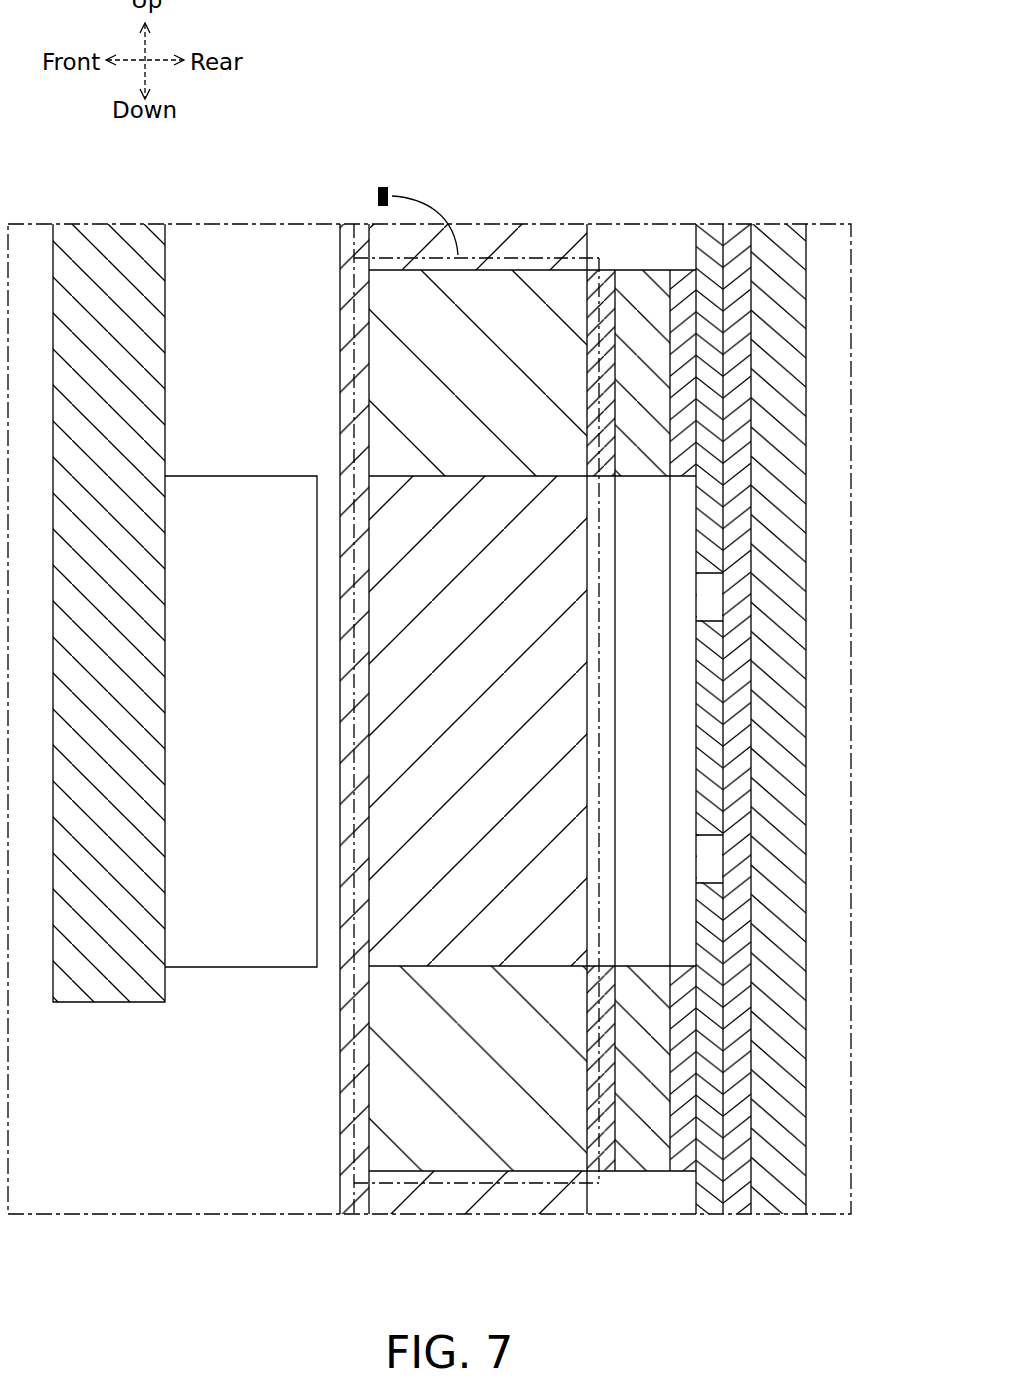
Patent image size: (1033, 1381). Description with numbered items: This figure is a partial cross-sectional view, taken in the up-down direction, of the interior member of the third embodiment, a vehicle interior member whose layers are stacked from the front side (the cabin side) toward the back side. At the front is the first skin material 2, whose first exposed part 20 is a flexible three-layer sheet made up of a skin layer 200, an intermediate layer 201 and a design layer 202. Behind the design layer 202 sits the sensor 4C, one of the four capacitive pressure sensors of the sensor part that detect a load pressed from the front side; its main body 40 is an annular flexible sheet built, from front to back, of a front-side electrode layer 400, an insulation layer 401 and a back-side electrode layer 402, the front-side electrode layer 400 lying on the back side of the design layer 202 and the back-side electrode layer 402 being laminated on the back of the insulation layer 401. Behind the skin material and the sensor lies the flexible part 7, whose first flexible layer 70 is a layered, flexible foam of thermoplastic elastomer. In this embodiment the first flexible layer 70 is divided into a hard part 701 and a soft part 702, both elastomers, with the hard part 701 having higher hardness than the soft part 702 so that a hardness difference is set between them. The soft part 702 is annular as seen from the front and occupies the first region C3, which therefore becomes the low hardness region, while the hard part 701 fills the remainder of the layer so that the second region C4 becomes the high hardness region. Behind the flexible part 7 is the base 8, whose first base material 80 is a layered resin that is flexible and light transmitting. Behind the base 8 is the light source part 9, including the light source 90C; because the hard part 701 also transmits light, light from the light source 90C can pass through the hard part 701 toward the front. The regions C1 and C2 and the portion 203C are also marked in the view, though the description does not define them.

The first skin material 2 is at (808, 147).
The flexible part 7 is at (465, 642).
The hard part 701 is at (375, 252).
The soft part 702 is at (388, 385).
The first flexible layer 70 is at (538, 1207).
The base 8 is at (357, 237).
The first base material 80 is at (358, 1207).
The light source part 9 is at (102, 240).
The light source 90C is at (210, 952).
The main body 40 is at (689, 661).
The front-side electrode layer 400 is at (685, 278).
The insulation layer 401 is at (643, 280).
The back-side electrode layer 402 is at (602, 270).
The sensor 4C is at (640, 1150).
The first exposed part 20 is at (799, 791).
The skin layer 200 is at (782, 1197).
The intermediate layer 201 is at (738, 1197).
The design layer 202 is at (713, 1197).
The cutout 203C is at (713, 867).
The cutout region C1 is at (712, 577).
The region C2 is at (627, 328).
The first region C3 is at (490, 380).
The second region C4 is at (438, 515).